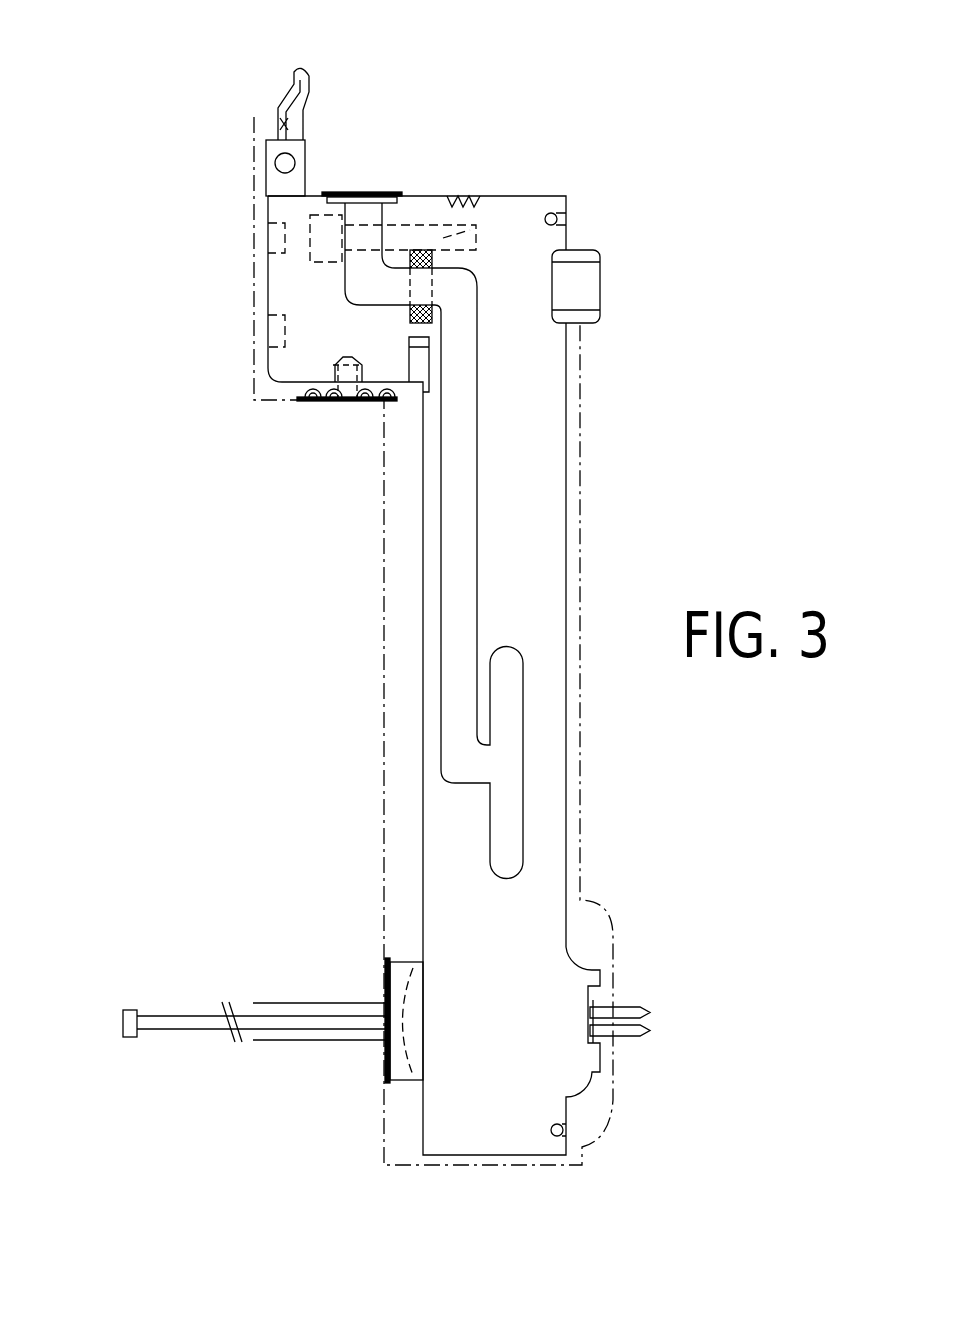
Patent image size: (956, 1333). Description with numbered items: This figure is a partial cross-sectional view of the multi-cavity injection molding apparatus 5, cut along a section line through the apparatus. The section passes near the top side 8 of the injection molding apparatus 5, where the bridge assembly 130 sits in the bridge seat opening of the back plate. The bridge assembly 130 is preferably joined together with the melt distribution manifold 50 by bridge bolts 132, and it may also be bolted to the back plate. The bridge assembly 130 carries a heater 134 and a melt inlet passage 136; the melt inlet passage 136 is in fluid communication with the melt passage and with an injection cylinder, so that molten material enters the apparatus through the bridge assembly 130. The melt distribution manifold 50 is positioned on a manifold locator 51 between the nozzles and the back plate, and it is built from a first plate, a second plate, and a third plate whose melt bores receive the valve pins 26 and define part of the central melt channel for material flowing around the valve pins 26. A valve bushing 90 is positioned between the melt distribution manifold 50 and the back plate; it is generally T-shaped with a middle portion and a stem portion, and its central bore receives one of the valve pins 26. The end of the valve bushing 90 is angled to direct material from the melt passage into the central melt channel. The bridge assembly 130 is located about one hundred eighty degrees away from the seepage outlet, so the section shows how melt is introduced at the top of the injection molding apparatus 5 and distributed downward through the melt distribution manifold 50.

The injection molding apparatus 5 is at (203, 197).
The top side 8 is at (245, 208).
The valve pin 26 is at (183, 1025).
The melt distribution manifold 50 is at (533, 433).
The manifold locator 51 is at (587, 280).
The valve bushing 90 is at (412, 963).
The bridge assembly 130 is at (312, 343).
The bridge bolt 132 is at (476, 225).
The heater 134 is at (307, 72).
The melt inlet passage 136 is at (370, 195).